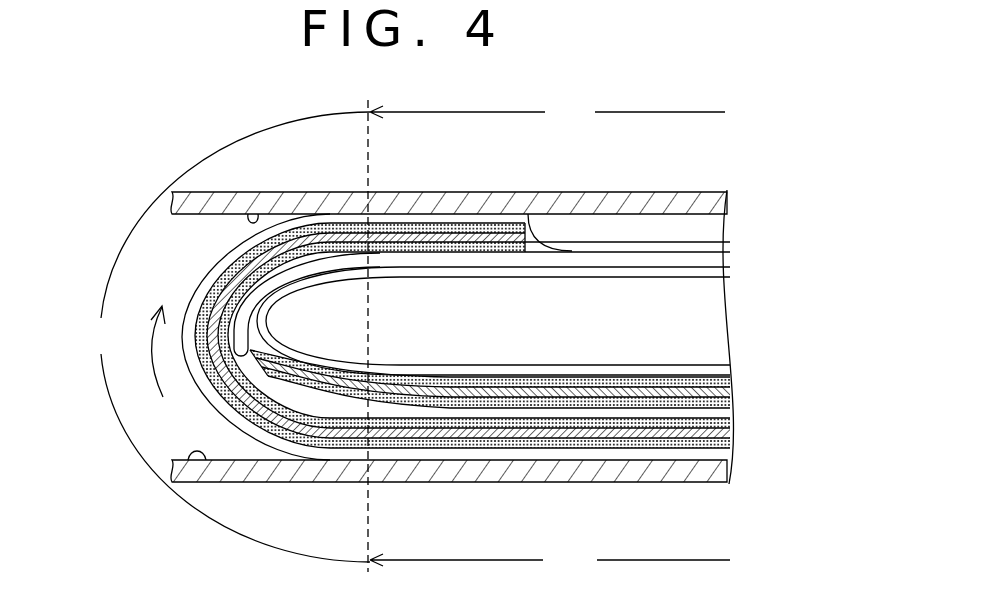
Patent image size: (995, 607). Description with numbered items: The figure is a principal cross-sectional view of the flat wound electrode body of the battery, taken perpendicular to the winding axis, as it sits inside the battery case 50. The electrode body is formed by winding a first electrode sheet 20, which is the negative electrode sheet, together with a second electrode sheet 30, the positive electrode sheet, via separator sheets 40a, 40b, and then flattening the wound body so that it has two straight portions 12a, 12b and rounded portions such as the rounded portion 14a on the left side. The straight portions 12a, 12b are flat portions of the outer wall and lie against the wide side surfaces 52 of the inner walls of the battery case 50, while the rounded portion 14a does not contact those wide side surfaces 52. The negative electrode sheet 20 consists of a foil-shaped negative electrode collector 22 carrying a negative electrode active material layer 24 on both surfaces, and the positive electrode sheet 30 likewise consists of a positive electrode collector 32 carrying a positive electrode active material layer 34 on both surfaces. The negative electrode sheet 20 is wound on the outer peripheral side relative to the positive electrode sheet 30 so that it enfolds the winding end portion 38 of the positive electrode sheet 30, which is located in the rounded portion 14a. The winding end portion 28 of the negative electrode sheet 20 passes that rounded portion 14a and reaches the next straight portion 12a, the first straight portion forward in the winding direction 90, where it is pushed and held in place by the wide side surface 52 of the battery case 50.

The battery case 50 is at (197, 200).
The wide side surface 52 is at (250, 210).
The straight portion 12a is at (547, 113).
The straight portion 12b is at (550, 560).
The winding end portion of the negative electrode sheet 28 is at (557, 251).
The winding end portion of the positive electrode sheet 38 is at (243, 332).
The rounded portion 14a is at (121, 351).
The winding direction 90 is at (155, 373).
The second electrode sheet 30 is at (490, 451).
The positive electrode active material layer 34 is at (433, 393).
The positive electrode collector 32 is at (470, 386).
The first electrode sheet 20 is at (462, 388).
The negative electrode active material layer 24 is at (561, 443).
The negative electrode collector 22 is at (607, 431).
The separator sheet 40a is at (656, 421).
The separator sheet 40b is at (702, 414).